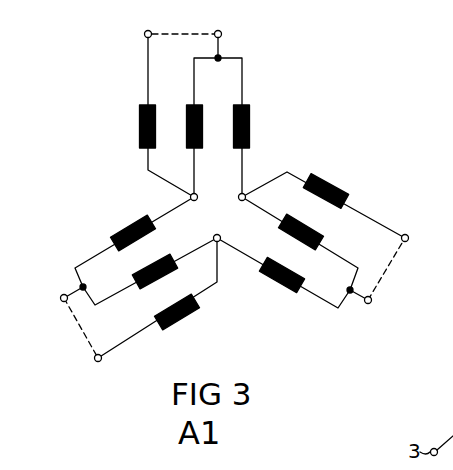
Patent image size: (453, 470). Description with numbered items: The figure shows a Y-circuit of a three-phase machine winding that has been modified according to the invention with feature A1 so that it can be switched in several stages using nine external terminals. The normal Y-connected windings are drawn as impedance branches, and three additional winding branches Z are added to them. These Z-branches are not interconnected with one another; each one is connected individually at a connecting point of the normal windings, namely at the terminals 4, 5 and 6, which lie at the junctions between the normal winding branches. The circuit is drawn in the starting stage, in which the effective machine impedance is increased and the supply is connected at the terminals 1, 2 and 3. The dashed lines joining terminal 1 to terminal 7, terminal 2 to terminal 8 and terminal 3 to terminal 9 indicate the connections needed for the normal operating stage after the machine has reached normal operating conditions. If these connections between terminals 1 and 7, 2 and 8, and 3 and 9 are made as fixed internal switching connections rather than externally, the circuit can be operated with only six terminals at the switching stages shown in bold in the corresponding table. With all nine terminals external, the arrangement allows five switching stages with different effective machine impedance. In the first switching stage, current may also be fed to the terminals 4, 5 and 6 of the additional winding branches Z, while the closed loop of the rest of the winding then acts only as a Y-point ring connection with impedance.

The terminal 1 is at (218, 30).
The terminal 2 is at (371, 302).
The terminal 3 is at (60, 298).
The terminal 4 is at (240, 200).
The terminal 5 is at (210, 224).
The terminal 6 is at (197, 195).
The additional terminal 7 is at (148, 30).
The additional terminal 8 is at (409, 240).
The additional terminal 9 is at (99, 362).
The additional winding branch Z is at (139, 139).